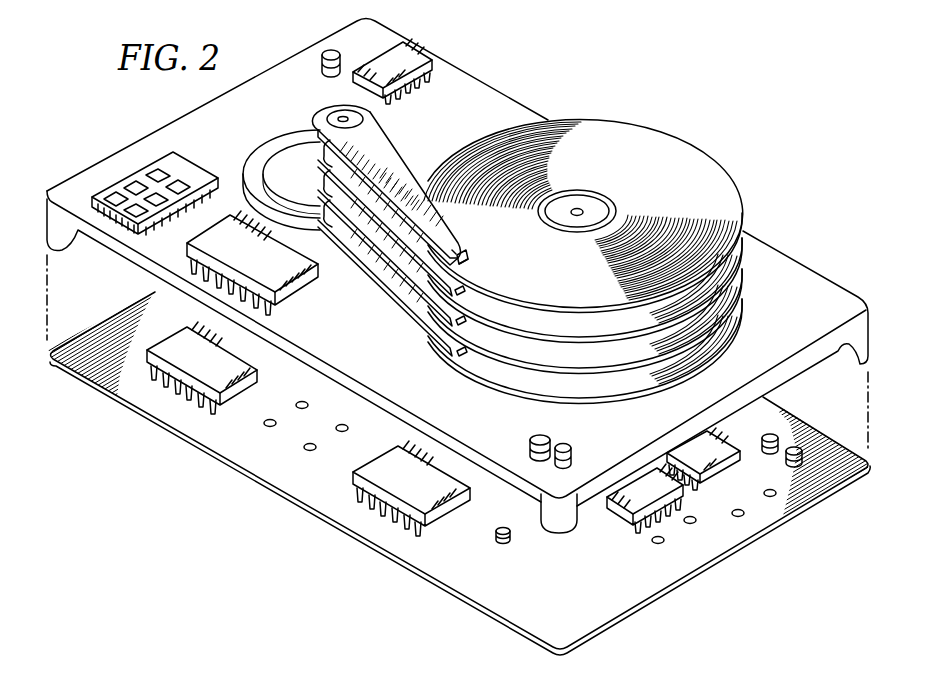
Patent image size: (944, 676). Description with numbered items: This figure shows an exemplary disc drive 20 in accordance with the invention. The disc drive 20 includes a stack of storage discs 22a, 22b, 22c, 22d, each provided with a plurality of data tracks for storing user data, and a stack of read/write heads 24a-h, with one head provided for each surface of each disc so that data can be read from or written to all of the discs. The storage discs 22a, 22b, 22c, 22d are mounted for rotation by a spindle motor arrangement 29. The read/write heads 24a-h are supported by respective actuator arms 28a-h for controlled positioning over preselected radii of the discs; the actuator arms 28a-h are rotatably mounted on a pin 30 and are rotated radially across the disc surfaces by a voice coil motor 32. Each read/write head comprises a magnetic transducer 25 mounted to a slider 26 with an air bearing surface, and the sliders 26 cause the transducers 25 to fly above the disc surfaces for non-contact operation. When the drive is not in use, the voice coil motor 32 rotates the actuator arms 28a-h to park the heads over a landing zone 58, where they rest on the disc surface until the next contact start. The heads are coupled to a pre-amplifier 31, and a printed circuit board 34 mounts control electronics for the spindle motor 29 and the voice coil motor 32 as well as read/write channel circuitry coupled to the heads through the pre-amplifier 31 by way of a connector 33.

The disc drive 20 is at (112, 115).
The storage disc 22a is at (743, 213).
The storage disc 22b is at (742, 238).
The storage disc 22c is at (739, 306).
The storage disc 22d is at (739, 335).
The read/write heads 24a-h is at (459, 239).
The magnetic transducer 25 is at (464, 264).
The slider 26 is at (462, 255).
The actuator arms 28a-h is at (398, 142).
The spindle motor arrangement 29 is at (578, 204).
The pin 30 is at (330, 116).
The pre-amplifier 31 is at (298, 285).
The voice coil motor 32 is at (282, 142).
The connector 33 is at (188, 170).
The printed circuit board 34 is at (574, 608).
The landing zone 58 is at (613, 207).